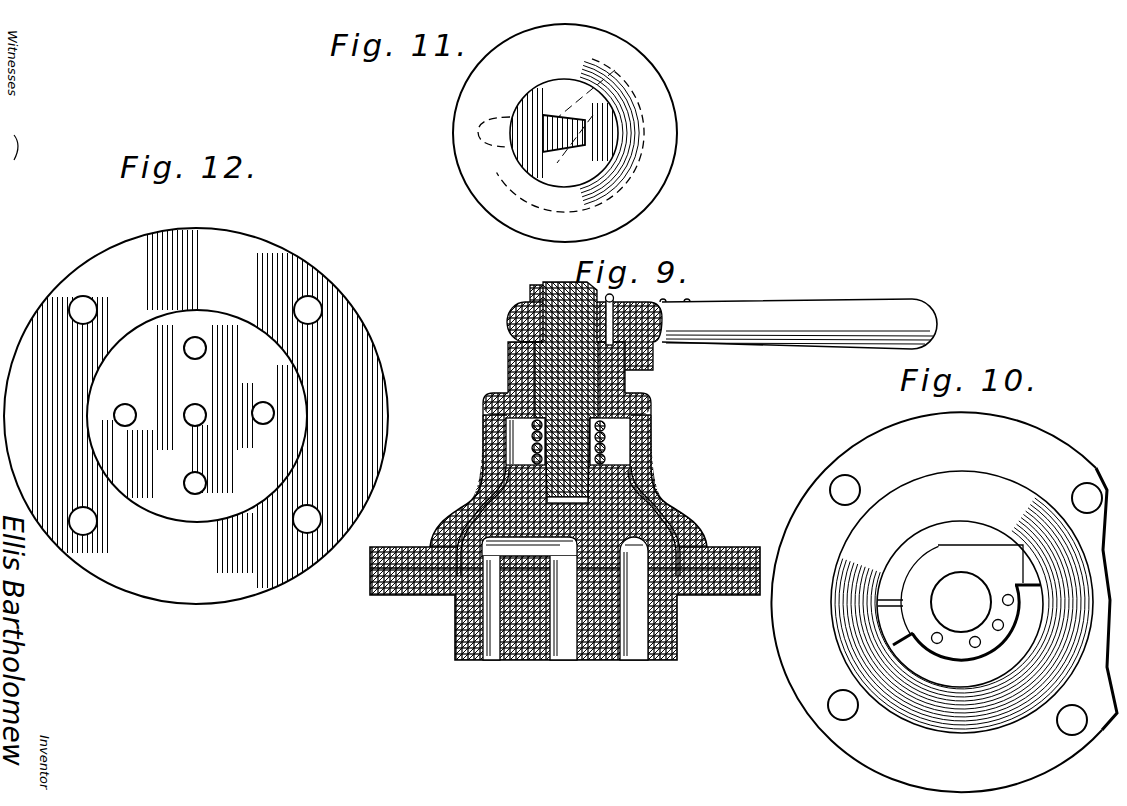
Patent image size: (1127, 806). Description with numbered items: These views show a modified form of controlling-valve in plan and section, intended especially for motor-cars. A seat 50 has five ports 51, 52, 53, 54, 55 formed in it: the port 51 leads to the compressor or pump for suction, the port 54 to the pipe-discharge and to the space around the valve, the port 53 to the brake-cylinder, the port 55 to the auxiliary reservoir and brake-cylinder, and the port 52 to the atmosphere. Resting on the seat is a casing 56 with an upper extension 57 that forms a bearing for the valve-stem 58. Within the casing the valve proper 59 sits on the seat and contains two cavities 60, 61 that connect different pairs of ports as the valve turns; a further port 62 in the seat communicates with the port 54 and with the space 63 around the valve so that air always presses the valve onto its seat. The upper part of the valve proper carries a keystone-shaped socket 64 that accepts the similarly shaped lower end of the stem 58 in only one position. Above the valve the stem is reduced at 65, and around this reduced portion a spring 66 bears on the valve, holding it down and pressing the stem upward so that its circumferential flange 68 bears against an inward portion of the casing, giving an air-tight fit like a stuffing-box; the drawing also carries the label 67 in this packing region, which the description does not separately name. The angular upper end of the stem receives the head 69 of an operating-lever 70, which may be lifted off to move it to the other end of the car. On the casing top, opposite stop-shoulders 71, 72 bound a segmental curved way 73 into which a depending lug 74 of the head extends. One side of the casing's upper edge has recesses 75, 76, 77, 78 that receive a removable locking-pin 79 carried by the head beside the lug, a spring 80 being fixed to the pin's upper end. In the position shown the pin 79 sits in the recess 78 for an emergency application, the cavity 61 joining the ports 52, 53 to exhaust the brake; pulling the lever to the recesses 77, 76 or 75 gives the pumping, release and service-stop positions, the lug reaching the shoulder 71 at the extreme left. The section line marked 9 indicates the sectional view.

In FIG. 11, the section line 9- 9 is at (586, 116).
In FIG. 12, the seat 50 is at (196, 416).
In FIG. 9, the seat 50 is at (707, 534).
In FIG. 12, the port 51 is at (193, 406).
In FIG. 9, the port 51 is at (564, 618).
In FIG. 12, the port 52 is at (265, 425).
In FIG. 9, the port 52 is at (642, 648).
In FIG. 12, the port 53 is at (183, 486).
In FIG. 12, the port 54 is at (88, 413).
In FIG. 9, the port 54 is at (494, 620).
In FIG. 12, the port 55 is at (194, 339).
In FIG. 9, the casing 56 is at (486, 434).
In FIG. 10, the casing 56 is at (944, 602).
In FIG. 9, the upper extension 57 is at (546, 367).
In FIG. 10, the upper extension 57 is at (913, 534).
In FIG. 9, the valve-stem 58 is at (566, 392).
In FIG. 10, the valve-stem 58 is at (950, 590).
In FIG. 11, the valve proper 59 is at (642, 133).
In FIG. 9, the cavity 60 is at (529, 549).
In FIG. 11, the cavity 60 is at (480, 120).
In FIG. 9, the cavity 61 is at (673, 508).
In FIG. 9, the port 62 is at (457, 563).
In FIG. 9, the space 63 is at (474, 492).
In FIG. 11, the space 63 is at (688, 138).
In FIG. 9, the socket 64 is at (648, 463).
In FIG. 11, the socket 64 is at (564, 133).
In FIG. 9, the reduced portion 65 is at (652, 408).
In FIG. 9, the spring 66 is at (533, 452).
In FIG. 9, the packing 67 is at (605, 425).
In FIG. 11, the packing 67 is at (620, 180).
In FIG. 9, the circumferential flange 68 is at (484, 414).
In FIG. 9, the head 69 is at (531, 301).
In FIG. 9, the operating-lever 70 is at (799, 310).
In FIG. 10, the stop-shoulder 71 is at (897, 640).
In FIG. 10, the stop-shoulder 72 is at (1022, 583).
In FIG. 10, the segmental curved way 73 is at (907, 655).
In FIG. 9, the depending lug 74 is at (655, 354).
In FIG. 10, the recess 75 is at (938, 643).
In FIG. 10, the recess 76 is at (978, 647).
In FIG. 10, the recess 77 is at (1003, 627).
In FIG. 10, the recess 78 is at (1013, 600).
In FIG. 9, the removable locking-pin 79 is at (616, 300).
In FIG. 9, the spring 80 is at (658, 300).